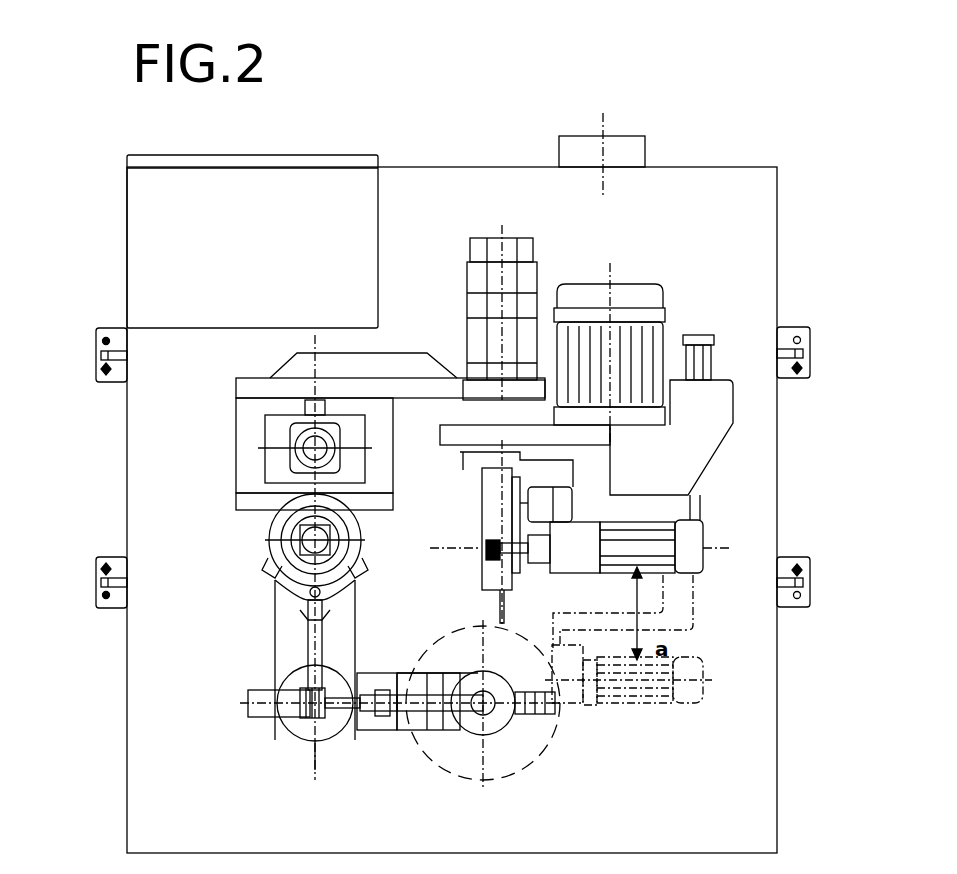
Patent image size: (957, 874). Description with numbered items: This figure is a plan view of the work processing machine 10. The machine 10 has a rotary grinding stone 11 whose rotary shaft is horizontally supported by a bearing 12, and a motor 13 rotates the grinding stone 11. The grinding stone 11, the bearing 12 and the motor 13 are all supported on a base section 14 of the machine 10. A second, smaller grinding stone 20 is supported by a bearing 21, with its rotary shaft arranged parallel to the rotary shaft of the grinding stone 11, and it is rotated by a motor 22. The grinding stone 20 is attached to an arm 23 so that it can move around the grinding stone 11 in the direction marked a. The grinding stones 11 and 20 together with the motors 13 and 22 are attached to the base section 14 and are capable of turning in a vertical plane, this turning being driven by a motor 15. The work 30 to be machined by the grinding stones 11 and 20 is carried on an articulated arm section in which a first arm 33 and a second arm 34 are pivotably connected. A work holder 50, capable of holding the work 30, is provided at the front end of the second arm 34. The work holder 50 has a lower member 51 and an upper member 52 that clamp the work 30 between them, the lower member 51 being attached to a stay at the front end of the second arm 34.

The work processing machine 10 is at (737, 98).
The rotary grinding stone 11 is at (497, 612).
The bearing 12 is at (490, 562).
The motor 13 is at (663, 305).
The base section 14 is at (292, 388).
The motor 15 is at (477, 282).
The grinding stone 20 is at (483, 540).
The bearing 21 is at (490, 535).
The motor 22 is at (690, 537).
The arm 23 is at (705, 618).
The work 30 is at (563, 723).
The first arm 33 is at (283, 620).
The second arm 34 is at (425, 725).
The work holder 50 is at (533, 735).
The lower member 51 is at (483, 713).
The upper member 52 is at (420, 708).